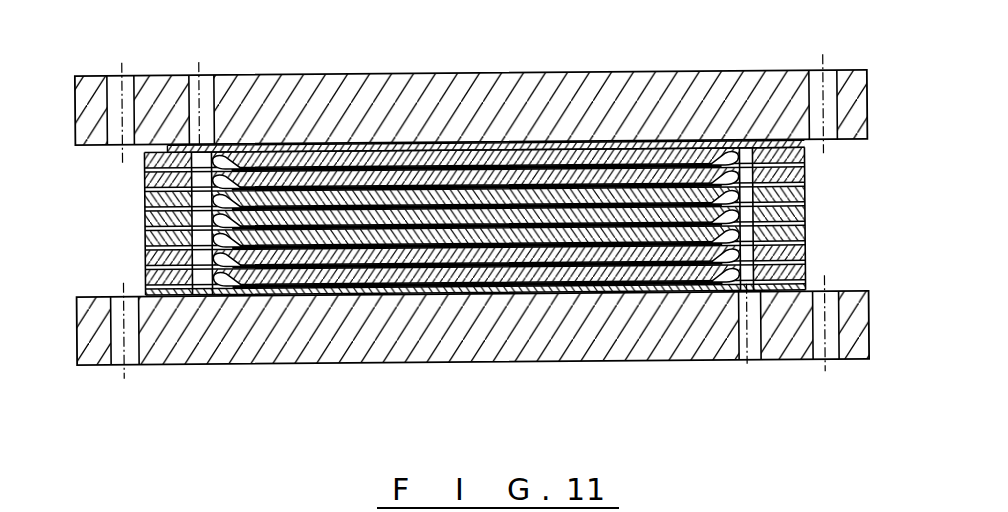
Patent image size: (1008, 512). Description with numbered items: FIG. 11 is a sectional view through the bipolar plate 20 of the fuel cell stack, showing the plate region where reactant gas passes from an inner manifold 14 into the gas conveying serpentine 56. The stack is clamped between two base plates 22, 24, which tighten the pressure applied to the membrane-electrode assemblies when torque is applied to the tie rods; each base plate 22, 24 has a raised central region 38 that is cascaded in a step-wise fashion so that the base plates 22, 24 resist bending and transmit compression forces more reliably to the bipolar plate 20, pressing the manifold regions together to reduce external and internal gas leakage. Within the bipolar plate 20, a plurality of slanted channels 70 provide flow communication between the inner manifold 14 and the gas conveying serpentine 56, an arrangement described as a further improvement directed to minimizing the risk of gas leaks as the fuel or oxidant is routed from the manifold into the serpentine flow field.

The inner manifold 14 is at (742, 232).
The bipolar plate 20 is at (806, 171).
The base plate 22 is at (451, 84).
The base plate 24 is at (343, 342).
The raised central region 38 is at (201, 146).
The gas conveying serpentine 56 is at (324, 162).
The slanted channels 70 is at (748, 140).